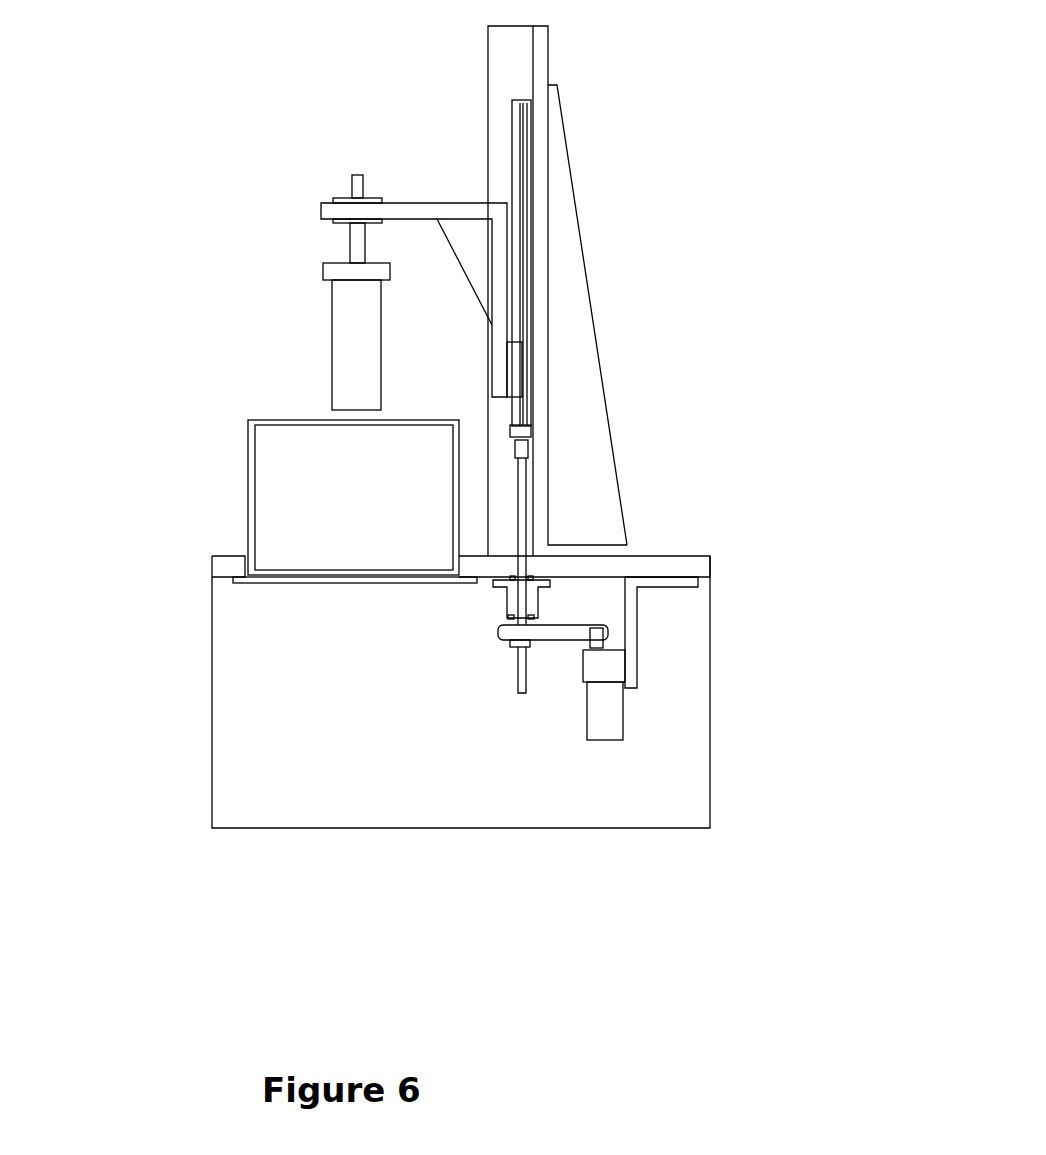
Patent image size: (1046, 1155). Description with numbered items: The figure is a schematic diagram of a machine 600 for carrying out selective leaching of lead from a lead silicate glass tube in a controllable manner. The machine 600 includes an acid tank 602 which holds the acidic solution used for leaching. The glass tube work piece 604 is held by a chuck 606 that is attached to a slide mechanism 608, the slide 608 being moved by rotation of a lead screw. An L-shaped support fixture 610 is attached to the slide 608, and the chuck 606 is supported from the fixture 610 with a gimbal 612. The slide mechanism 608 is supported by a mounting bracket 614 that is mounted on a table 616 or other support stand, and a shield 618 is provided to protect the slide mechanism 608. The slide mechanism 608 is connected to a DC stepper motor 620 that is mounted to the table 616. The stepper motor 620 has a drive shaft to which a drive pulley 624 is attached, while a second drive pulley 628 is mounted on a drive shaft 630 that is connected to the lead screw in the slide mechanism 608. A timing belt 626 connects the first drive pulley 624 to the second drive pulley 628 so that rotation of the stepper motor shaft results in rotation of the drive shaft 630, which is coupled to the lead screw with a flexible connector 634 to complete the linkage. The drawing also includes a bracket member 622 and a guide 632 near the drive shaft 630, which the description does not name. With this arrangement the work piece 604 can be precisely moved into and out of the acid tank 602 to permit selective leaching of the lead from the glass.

The machine 600 is at (170, 652).
The acid tank 602 is at (247, 497).
The work piece 604 is at (332, 345).
The chuck 606 is at (323, 263).
The slide mechanism 608 is at (510, 180).
The L-shaped support fixture 610 is at (506, 345).
The gimbal 612 is at (351, 193).
The mounting bracket 614 is at (595, 313).
The table 616 is at (703, 568).
The shield 618 is at (490, 92).
The DC stepper motor 620 is at (603, 743).
The bracket 622 is at (657, 618).
The drive pulley 624 is at (595, 623).
The timing belt 626 is at (555, 623).
The second drive pulley 628 is at (509, 655).
The drive shaft 630 is at (516, 700).
The needle guide 632 is at (502, 605).
The flexible connector 634 is at (533, 447).